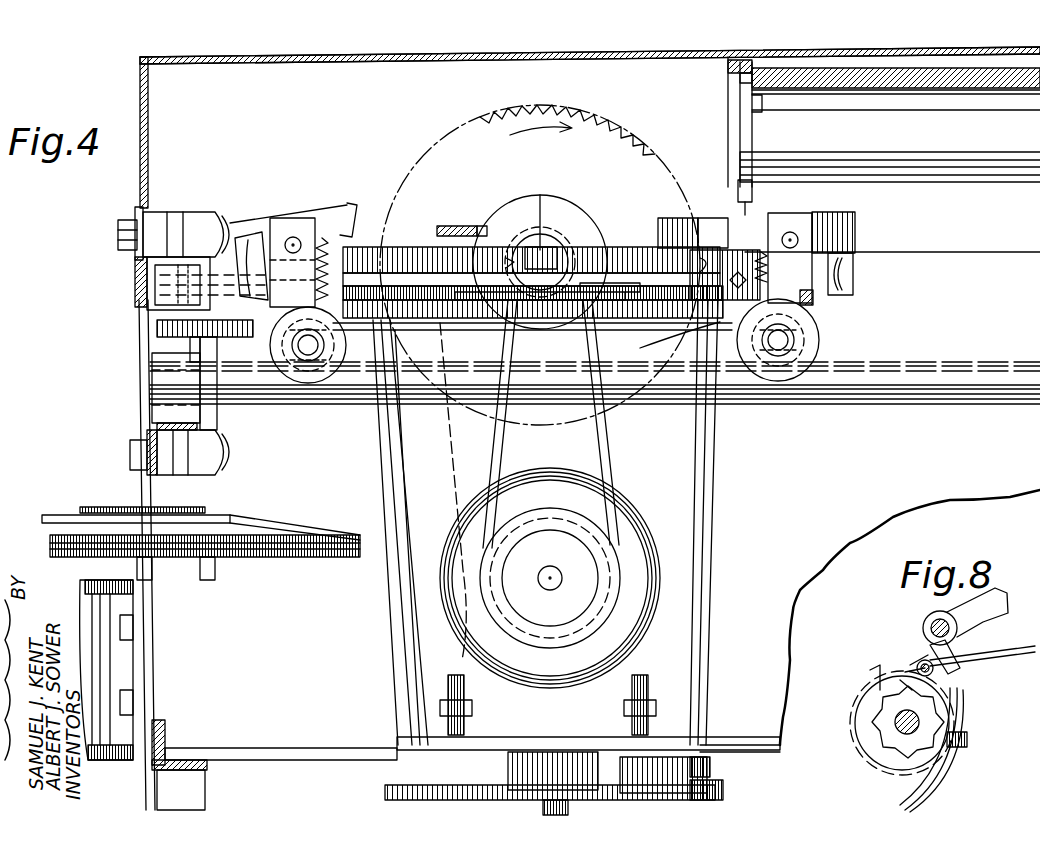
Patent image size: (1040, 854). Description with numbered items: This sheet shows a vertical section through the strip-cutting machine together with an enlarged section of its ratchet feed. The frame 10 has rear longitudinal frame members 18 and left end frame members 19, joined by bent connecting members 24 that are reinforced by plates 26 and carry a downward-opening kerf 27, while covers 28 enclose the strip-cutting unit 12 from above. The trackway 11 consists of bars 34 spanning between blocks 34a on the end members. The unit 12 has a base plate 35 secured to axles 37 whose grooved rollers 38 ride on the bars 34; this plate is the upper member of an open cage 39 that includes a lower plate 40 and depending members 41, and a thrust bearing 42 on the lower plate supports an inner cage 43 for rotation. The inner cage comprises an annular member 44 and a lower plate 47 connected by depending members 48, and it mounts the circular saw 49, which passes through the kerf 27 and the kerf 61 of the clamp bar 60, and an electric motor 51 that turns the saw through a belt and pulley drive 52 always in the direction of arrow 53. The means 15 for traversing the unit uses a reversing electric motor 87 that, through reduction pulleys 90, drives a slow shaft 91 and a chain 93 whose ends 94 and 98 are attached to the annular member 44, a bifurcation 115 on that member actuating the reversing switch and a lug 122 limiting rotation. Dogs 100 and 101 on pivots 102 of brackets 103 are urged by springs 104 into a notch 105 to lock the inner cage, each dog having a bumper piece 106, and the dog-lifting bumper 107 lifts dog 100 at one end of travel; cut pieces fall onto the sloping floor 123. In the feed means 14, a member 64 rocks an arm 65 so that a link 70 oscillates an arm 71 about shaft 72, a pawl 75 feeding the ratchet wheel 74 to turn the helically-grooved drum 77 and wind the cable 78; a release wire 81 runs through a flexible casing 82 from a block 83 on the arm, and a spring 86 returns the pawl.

In FIG. 4, the frame 10 is at (140, 779).
In FIG. 4, the trackway 11 is at (800, 405).
In FIG. 4, the strip-cutting unit 12 is at (358, 448).
In FIG. 8, the means to advance the panel-holding means 14 is at (862, 678).
In FIG. 4, the means to move and reverse the unit 15 is at (240, 481).
In FIG. 4, the rear longitudinal frame members 18 is at (268, 755).
In FIG. 4, the left end frame members 19 is at (142, 286).
In FIG. 4, the connecting members 24 is at (726, 66).
In FIG. 4, the reinforcing plates 26 is at (738, 88).
In FIG. 4, the kerf 27 is at (752, 97).
In FIG. 4, the covers 28 is at (446, 58).
In FIG. 4, the bars 34 is at (875, 392).
In FIG. 4, the blocks 34a is at (152, 360).
In FIG. 4, the base plate 35 is at (476, 320).
In FIG. 4, the axles 37 is at (292, 348).
In FIG. 4, the grooved rollers 38 is at (300, 370).
In FIG. 4, the open cage 39 is at (380, 796).
In FIG. 4, the lower plate 40 is at (470, 795).
In FIG. 4, the depending members 41 is at (450, 458).
In FIG. 4, the thrust bearing 42 is at (585, 758).
In FIG. 4, the inner cage 43 is at (728, 590).
In FIG. 4, the annular member 44 is at (420, 236).
In FIG. 4, the lower plate of inner cage 47 is at (672, 735).
In FIG. 4, the depending members of inner cage 48 is at (390, 574).
In FIG. 4, the circular saw 49 is at (588, 94).
In FIG. 4, the electric motor 51 is at (612, 520).
In FIG. 4, the belt and pulley drive 52 is at (560, 225).
In FIG. 4, the arrow 53 is at (545, 130).
In FIG. 4, the clamp bar 60 is at (906, 75).
In FIG. 4, the kerf of clamp bar 61 is at (892, 98).
In FIG. 4, the member 64 is at (676, 220).
In FIG. 4, the arm 65 is at (474, 212).
In FIG. 8, the link 70 is at (986, 620).
In FIG. 8, the arm 71 is at (924, 640).
In FIG. 8, the shaft 72 is at (898, 730).
In FIG. 8, the ratchet wheel 74 is at (876, 718).
In FIG. 8, the pawl 75 is at (918, 666).
In FIG. 8, the helically-grooved drum 77 is at (856, 746).
In FIG. 8, the cable 78 is at (1005, 654).
In FIG. 8, the wire 81 is at (958, 690).
In FIG. 8, the flexible casing 82 is at (935, 788).
In FIG. 8, the block 83 is at (967, 741).
In FIG. 8, the spring 86 is at (918, 660).
In FIG. 4, the electric motor 87 is at (112, 655).
In FIG. 4, the reduction gearing or pulleys 90 is at (258, 520).
In FIG. 4, the slow shaft 91 is at (210, 362).
In FIG. 4, the chain 93 is at (428, 315).
In FIG. 4, the chain end 94 is at (532, 256).
In FIG. 4, the other chain end 98 is at (628, 318).
In FIG. 4, the dog 100 is at (342, 218).
In FIG. 4, the dog 101 is at (738, 195).
In FIG. 4, the pivots 102 is at (796, 234).
In FIG. 4, the brackets 103 is at (805, 292).
In FIG. 4, the springs 104 is at (562, 269).
In FIG. 4, the notch 105 is at (700, 260).
In FIG. 4, the bumper piece 106 is at (854, 274).
In FIG. 4, the dog-lifting bumper 107 is at (222, 294).
In FIG. 4, the abutment-engaging bifurcation 115 is at (542, 210).
In FIG. 4, the stop-engaging lug 122 is at (676, 344).
In FIG. 4, the sloping floor 123 is at (924, 165).